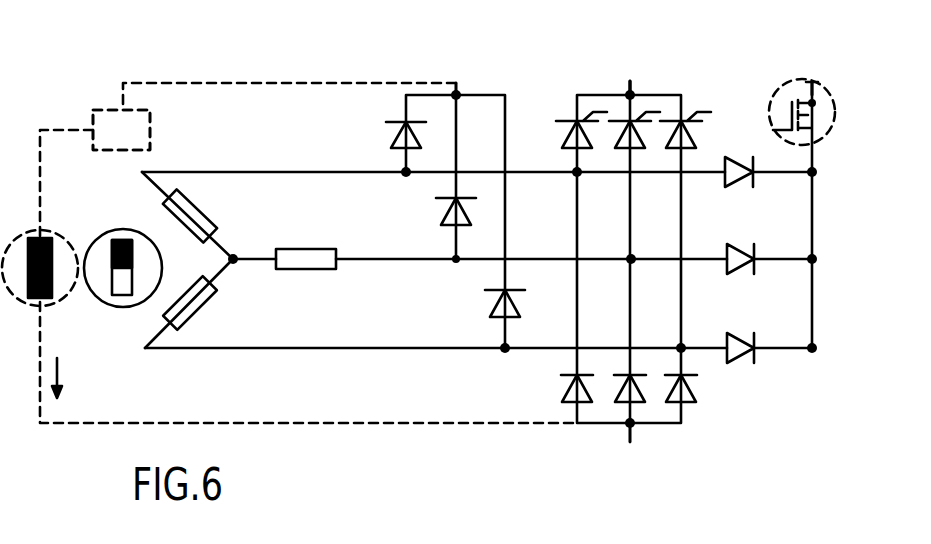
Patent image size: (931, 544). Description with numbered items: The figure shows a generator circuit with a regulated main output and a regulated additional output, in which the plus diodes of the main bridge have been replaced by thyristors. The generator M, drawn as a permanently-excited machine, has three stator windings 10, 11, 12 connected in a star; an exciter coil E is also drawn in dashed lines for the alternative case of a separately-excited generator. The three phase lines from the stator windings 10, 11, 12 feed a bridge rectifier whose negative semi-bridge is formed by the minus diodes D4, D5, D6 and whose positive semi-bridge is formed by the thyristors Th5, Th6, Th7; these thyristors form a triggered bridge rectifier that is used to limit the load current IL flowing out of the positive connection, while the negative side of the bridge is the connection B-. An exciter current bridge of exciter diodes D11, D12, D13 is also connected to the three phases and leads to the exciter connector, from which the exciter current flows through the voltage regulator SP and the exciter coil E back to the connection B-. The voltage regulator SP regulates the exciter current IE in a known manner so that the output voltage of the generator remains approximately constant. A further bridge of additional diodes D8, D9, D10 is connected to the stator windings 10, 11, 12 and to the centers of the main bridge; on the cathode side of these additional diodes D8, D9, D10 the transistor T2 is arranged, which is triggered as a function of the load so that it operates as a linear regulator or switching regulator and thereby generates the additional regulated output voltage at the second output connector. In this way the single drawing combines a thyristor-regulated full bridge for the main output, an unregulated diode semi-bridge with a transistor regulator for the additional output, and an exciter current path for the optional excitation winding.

The voltage regulator SP is at (150, 125).
The load current IL is at (646, 77).
The negative connection B- is at (636, 453).
The transistor T2 is at (826, 130).
The minus diode D4 is at (565, 395).
The minus diode D5 is at (620, 400).
The minus diode D6 is at (690, 400).
The additional diode D8 is at (741, 184).
The additional diode D9 is at (741, 272).
The additional diode D10 is at (741, 361).
The exciter diode D11 is at (392, 141).
The exciter diode D12 is at (443, 216).
The exciter diode D13 is at (493, 301).
The thyristor Th5 is at (568, 149).
The thyristor Th6 is at (621, 149).
The thyristor Th7 is at (671, 149).
The stator winding 10 is at (313, 255).
The stator winding 11 is at (194, 213).
The stator winding 12 is at (205, 293).
The exciter coil E is at (66, 240).
The permanently-excited generator M is at (147, 237).
The exciter current IE is at (72, 377).